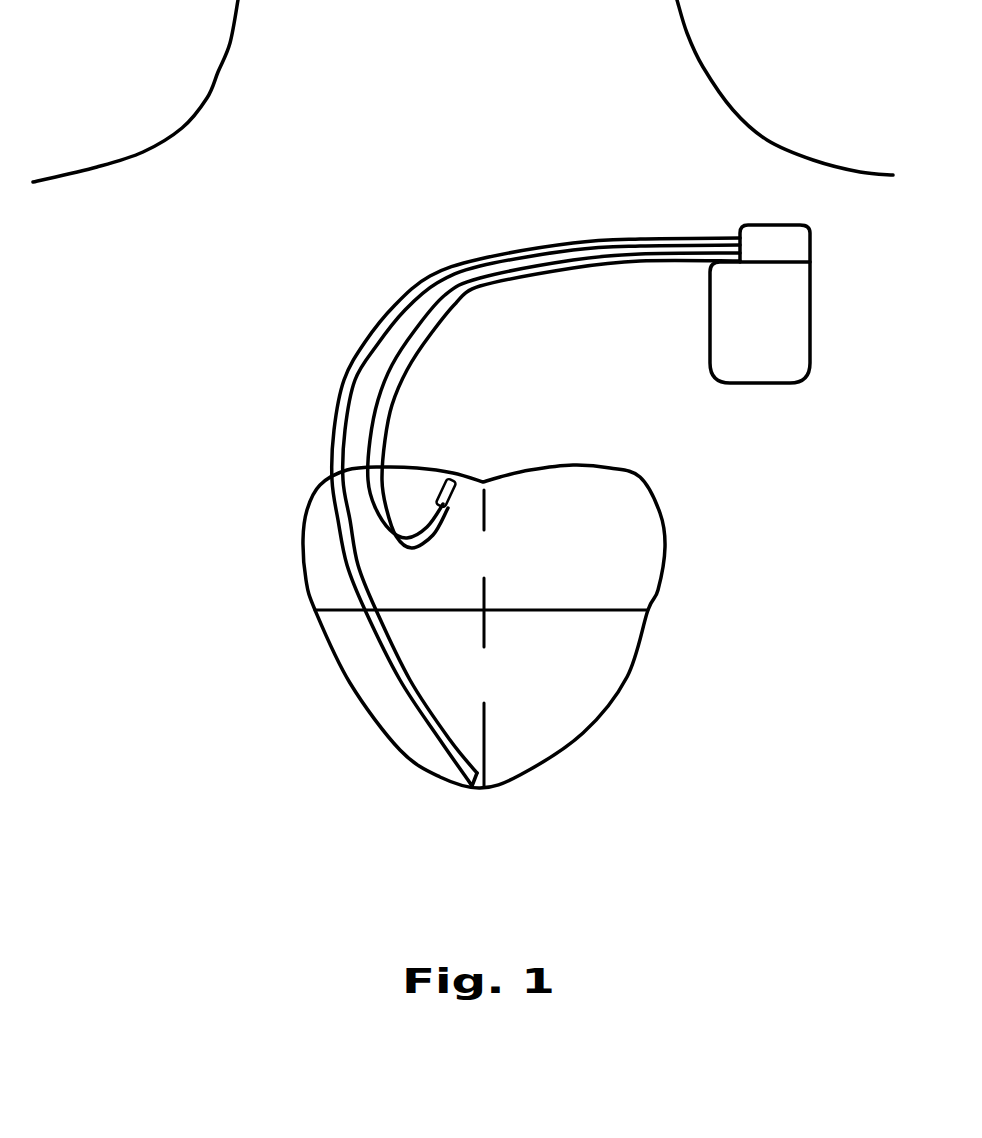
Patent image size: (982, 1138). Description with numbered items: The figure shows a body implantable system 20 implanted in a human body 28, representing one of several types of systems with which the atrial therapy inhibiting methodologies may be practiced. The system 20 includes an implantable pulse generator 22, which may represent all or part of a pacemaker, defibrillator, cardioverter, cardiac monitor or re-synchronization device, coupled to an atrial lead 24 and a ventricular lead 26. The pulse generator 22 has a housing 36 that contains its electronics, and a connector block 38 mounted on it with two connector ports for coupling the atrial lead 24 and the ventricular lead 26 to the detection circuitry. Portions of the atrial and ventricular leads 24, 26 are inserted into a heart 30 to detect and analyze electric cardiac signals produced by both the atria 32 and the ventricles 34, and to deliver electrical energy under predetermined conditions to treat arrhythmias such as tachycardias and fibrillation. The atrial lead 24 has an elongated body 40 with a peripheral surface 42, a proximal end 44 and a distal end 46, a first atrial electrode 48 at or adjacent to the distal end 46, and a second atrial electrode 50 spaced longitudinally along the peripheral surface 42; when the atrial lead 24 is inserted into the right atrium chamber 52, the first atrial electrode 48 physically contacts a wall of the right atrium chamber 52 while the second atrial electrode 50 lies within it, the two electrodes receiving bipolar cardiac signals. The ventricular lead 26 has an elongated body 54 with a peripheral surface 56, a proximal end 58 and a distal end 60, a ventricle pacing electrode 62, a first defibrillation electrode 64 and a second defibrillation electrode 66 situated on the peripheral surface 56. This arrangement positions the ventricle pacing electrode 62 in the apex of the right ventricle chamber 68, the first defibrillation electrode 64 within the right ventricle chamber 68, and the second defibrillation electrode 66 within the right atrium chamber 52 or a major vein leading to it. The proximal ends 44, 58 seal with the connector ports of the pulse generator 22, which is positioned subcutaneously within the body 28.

The body implantable system 20 is at (660, 190).
The implantable pulse generator 22 is at (826, 310).
The atrial lead 24 is at (492, 514).
The ventricular lead 26 is at (473, 248).
The human body 28 is at (142, 170).
The heart 30 is at (518, 661).
The atria 32 is at (503, 572).
The ventricles 34 is at (505, 692).
The housing 36 is at (804, 354).
The connector block 38 is at (811, 247).
The elongated body 40 is at (580, 278).
The peripheral surface 42 is at (417, 347).
The proximal end 44 is at (721, 260).
The distal end 46 is at (437, 478).
The first atrial electrode 48 is at (456, 478).
The second atrial electrode 50 is at (432, 501).
The right atrium chamber 52 is at (437, 589).
The elongated body 54 is at (573, 242).
The peripheral surface 56 is at (395, 305).
The proximal end 58 is at (737, 226).
The distal end 60 is at (488, 788).
The ventricle pacing electrode 62 is at (475, 790).
The first defibrillation electrode 64 is at (423, 717).
The second defibrillation electrode 66 is at (342, 545).
The right ventricle chamber 68 is at (458, 655).